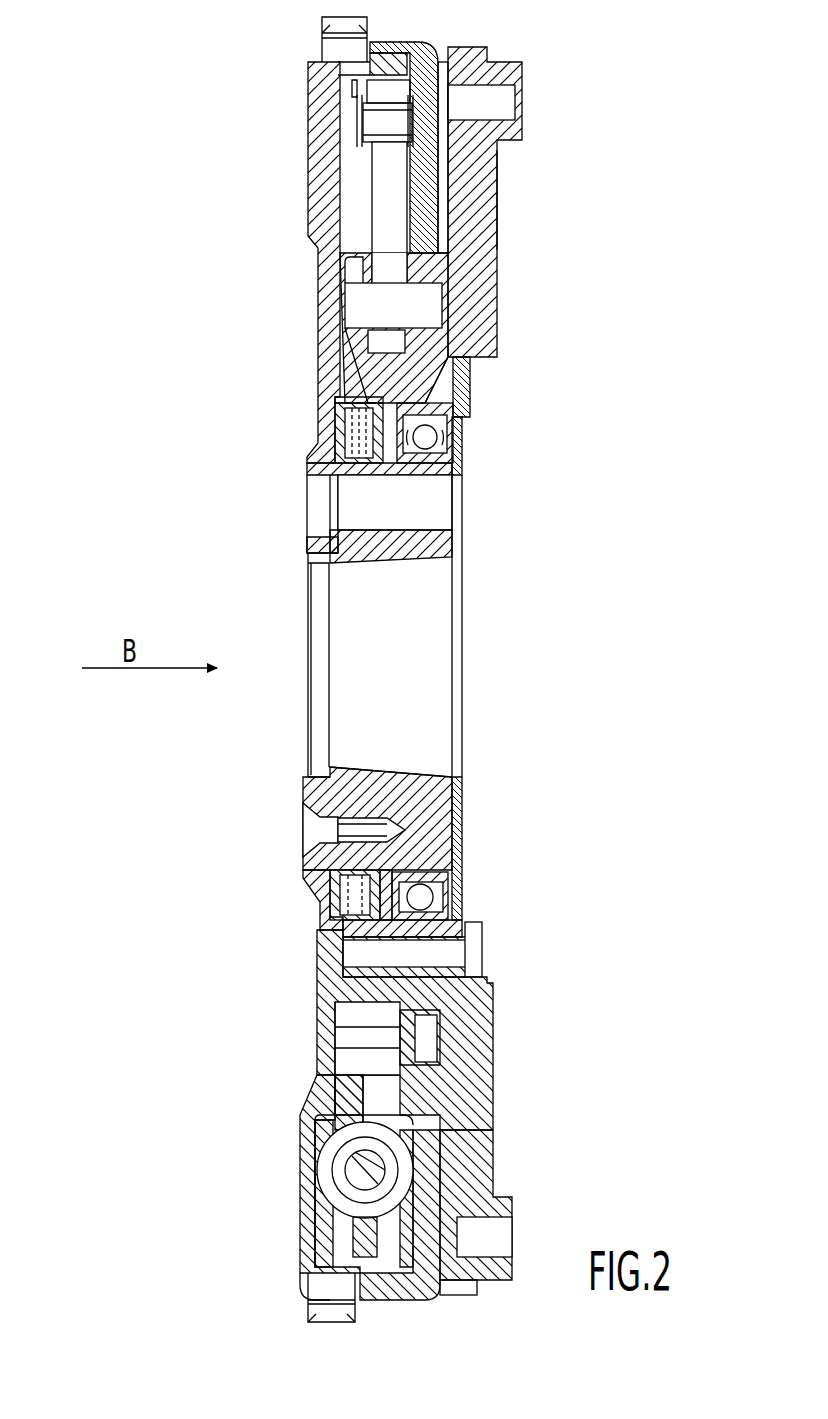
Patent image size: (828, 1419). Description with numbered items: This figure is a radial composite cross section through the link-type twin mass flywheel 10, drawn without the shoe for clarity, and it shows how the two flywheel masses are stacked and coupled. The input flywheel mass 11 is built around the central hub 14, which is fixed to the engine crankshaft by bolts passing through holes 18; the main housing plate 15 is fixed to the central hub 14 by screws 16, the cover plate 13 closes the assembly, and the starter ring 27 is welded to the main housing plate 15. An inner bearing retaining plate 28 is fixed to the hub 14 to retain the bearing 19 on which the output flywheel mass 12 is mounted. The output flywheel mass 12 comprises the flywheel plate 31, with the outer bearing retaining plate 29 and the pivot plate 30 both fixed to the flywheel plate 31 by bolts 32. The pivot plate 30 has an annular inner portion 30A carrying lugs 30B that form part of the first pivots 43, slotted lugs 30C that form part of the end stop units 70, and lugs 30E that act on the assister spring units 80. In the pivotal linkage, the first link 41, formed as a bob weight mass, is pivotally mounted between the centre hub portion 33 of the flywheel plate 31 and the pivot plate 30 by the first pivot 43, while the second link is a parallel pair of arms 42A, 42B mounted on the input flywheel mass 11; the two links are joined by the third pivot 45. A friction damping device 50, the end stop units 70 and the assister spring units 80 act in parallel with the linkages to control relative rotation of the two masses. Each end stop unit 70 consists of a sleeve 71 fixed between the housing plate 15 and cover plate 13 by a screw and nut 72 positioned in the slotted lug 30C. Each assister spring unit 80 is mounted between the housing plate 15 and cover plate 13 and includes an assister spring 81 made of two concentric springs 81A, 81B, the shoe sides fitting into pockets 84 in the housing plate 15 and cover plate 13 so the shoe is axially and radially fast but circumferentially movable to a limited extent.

The twin mass flywheel 10 is at (553, 82).
The input flywheel mass 11 is at (313, 249).
The output flywheel mass 12 is at (500, 253).
The cover plate 13 is at (433, 155).
The central hub 14 is at (373, 567).
The main housing plate 15 is at (317, 165).
The screws 16 is at (310, 829).
The holes 18 is at (447, 508).
The bearing 19 is at (427, 438).
The starter ring 27 is at (331, 27).
The inner bearing retaining plate 28 is at (455, 545).
The outer bearing retaining plate 29 is at (462, 398).
The pivot plate 30 is at (357, 352).
The annular inner portion 30A is at (338, 393).
The lugs 30B is at (357, 258).
The slotted lugs 30C is at (347, 1083).
The lugs 30E is at (362, 1243).
The flywheel plate 31 is at (487, 200).
The bolts 32 is at (482, 948).
The centre hub portion 33 is at (433, 338).
The first link 41 is at (383, 197).
The arm 42A is at (422, 88).
The arm 42B is at (353, 88).
The first pivot 43 is at (363, 310).
The third pivot 45 is at (373, 120).
The friction damping device 50 is at (334, 429).
The end stop unit 70 is at (397, 1012).
The sleeve 71 is at (328, 1020).
The screw and nut 72 is at (427, 1043).
The assister spring unit 80 is at (313, 1197).
The assister spring 81 is at (315, 1158).
The outer concentric spring 81A is at (405, 1158).
The inner concentric spring 81B is at (392, 1178).
The pockets 84 is at (322, 1232).